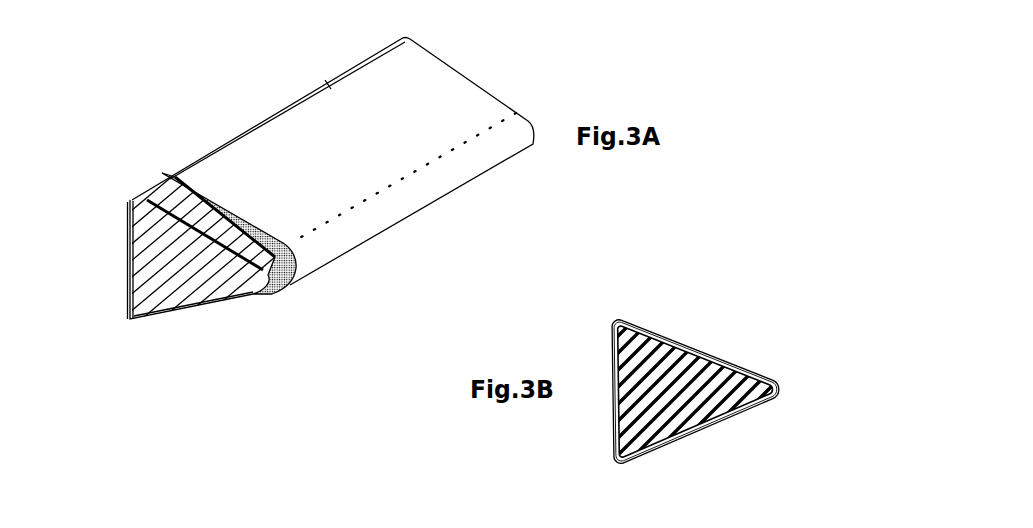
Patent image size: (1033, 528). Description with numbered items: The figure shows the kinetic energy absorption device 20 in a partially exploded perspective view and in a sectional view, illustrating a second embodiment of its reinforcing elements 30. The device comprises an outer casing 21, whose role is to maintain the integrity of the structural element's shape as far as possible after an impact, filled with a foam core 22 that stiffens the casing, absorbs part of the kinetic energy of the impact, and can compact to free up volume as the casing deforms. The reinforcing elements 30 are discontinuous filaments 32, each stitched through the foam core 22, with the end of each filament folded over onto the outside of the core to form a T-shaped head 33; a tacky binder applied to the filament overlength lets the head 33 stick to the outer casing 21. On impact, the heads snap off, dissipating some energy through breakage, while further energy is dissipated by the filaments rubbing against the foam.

In FIG. 3A, the kinetic energy absorption device 20 is at (268, 90).
In FIG. 3A, the outer casing 21 is at (173, 163).
In FIG. 3A, the foam core 22 is at (267, 296).
In FIG. 3B, the foam core 22 is at (753, 403).
In FIG. 3A, the reinforcing elements 30 is at (183, 399).
In FIG. 3B, the reinforcing elements 30 is at (798, 273).
In FIG. 3A, the discontinuous filament 32 is at (130, 211).
In FIG. 3B, the discontinuous filament 32 is at (689, 340).
In FIG. 3A, the head 33 is at (130, 254).
In FIG. 3B, the head 33 is at (724, 350).